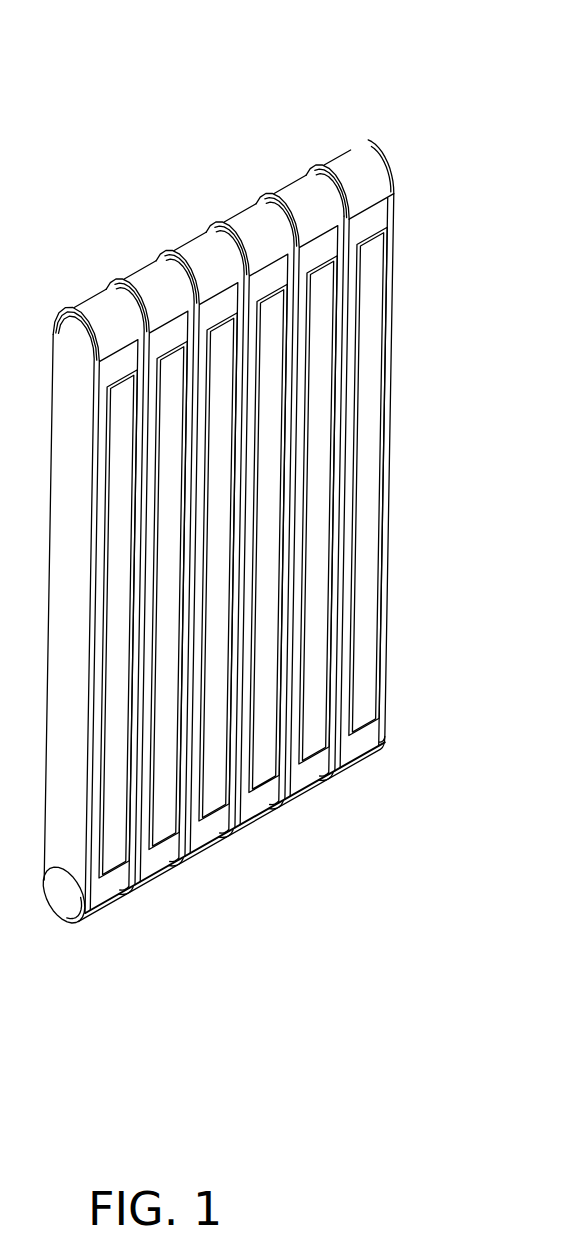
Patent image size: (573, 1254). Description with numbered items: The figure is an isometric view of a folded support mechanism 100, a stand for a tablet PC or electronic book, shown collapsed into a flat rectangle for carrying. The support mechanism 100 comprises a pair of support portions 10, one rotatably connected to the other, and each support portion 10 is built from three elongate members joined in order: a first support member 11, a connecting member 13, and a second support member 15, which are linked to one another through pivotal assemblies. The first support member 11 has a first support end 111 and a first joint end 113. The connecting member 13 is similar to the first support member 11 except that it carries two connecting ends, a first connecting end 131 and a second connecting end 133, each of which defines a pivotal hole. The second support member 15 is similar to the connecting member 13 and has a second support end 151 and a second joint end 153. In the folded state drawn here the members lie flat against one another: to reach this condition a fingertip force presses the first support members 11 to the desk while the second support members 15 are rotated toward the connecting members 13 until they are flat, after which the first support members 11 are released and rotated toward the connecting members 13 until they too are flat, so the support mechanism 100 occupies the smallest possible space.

The support mechanism 100 is at (170, 55).
The support portion 10 is at (191, 223).
The first support member 11 is at (218, 563).
The first support end 111 is at (370, 726).
The first joint end 113 is at (390, 211).
The connecting member 13 is at (328, 772).
The first connecting end 131 is at (315, 203).
The second connecting end 133 is at (302, 772).
The second support member 15 is at (262, 767).
The second support end 151 is at (248, 800).
The second joint end 153 is at (270, 242).